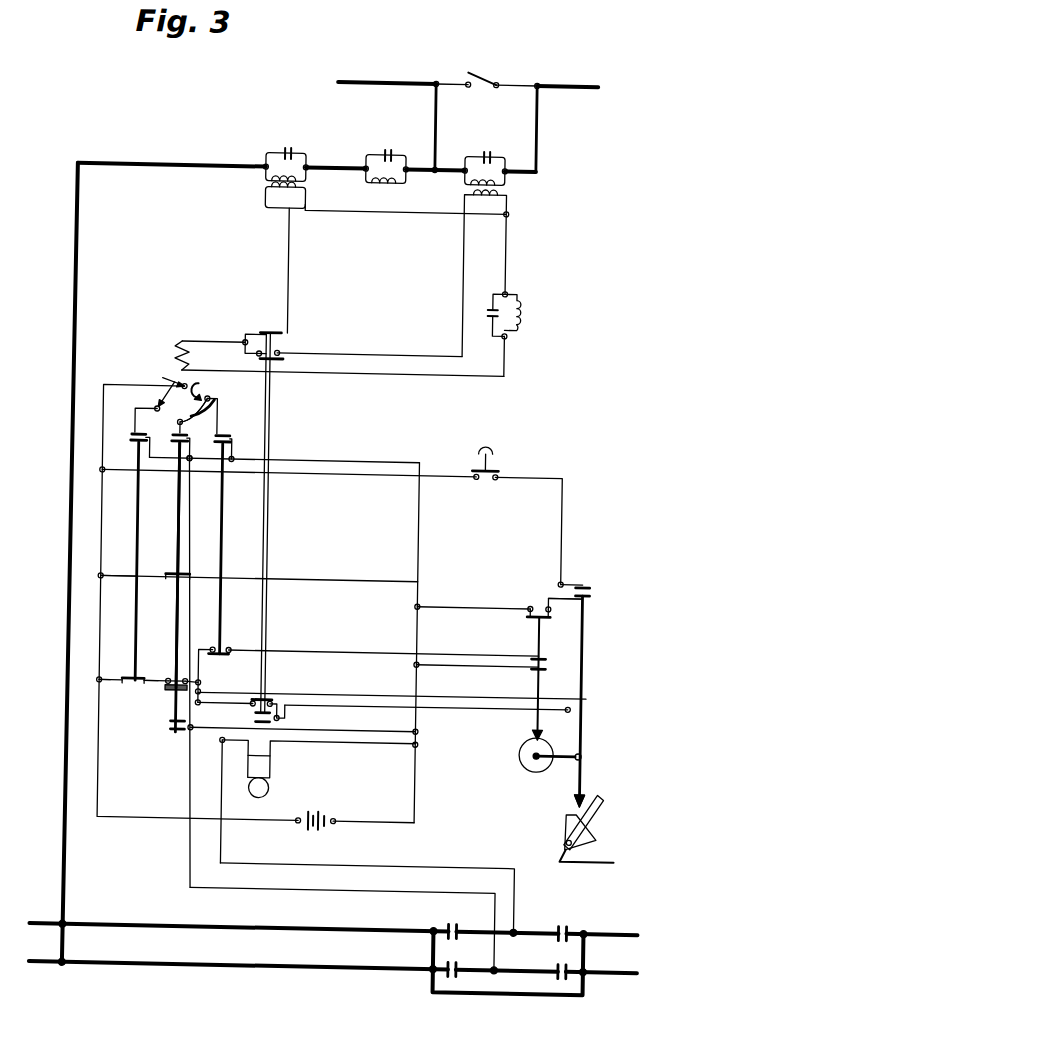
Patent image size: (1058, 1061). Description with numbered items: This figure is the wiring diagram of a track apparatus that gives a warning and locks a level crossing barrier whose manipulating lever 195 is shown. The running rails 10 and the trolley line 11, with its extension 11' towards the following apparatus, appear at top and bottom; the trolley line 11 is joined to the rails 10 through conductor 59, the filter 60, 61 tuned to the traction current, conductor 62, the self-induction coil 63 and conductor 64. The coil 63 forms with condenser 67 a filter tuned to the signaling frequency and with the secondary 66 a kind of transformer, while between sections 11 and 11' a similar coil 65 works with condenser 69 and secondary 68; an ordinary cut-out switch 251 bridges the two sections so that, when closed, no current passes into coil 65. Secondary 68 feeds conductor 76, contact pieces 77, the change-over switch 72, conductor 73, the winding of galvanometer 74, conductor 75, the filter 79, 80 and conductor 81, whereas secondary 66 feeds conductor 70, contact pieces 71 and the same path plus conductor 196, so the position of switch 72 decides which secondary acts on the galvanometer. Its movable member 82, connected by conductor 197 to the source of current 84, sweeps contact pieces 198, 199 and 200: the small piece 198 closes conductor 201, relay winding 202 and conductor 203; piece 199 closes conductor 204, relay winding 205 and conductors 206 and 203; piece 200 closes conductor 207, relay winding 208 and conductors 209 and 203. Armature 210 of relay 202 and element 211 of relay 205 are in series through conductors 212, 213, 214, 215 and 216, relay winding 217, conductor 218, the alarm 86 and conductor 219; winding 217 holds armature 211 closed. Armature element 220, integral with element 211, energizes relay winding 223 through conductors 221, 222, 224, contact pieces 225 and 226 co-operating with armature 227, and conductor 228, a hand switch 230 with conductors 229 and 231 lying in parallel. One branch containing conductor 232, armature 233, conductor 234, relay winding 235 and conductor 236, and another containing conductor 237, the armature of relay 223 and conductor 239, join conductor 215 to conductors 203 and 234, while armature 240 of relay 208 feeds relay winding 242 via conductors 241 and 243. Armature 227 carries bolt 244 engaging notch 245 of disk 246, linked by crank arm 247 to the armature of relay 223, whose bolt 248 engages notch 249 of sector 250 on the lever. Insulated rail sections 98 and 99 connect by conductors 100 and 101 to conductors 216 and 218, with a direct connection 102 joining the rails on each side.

The running rails 10 is at (626, 932).
The trolley line 11 is at (387, 67).
The extension of trolley line 11' is at (567, 111).
The cut-out switch 251 is at (478, 70).
The conductor 59 is at (431, 114).
The conductor 64 is at (170, 165).
The self-induction coil 63 is at (277, 170).
The condenser 67 is at (283, 149).
The conductor 62 is at (349, 166).
The filter tuned to the traction current 60 is at (382, 152).
The filter tuned to the traction current 61 is at (382, 184).
The condenser 69 is at (490, 157).
The self-induction coil 65 is at (505, 181).
The secondary 66 is at (285, 200).
The conductor 196 is at (410, 213).
The conductor 70 is at (286, 292).
The secondary 68 is at (466, 194).
The conductor 76 is at (460, 280).
The conductor 81 is at (503, 242).
The filter 79 is at (491, 305).
The filter 80 is at (518, 311).
The conductor 75 is at (440, 374).
The contact pieces 77 is at (277, 357).
The contact pieces 71 is at (280, 336).
The change-over switch 72 is at (258, 342).
The conductor 73 is at (197, 343).
The galvanometer 74 is at (172, 357).
The movable member 82 is at (162, 382).
The contact piece 198 is at (144, 400).
The conductor 201 is at (131, 430).
The contact piece 200 is at (198, 396).
The contact piece 199 is at (200, 423).
The conductor 207 is at (214, 409).
The relay winding 208 is at (230, 440).
The relay winding 205 is at (193, 557).
The relay winding 202 is at (126, 556).
The conductor 209 is at (250, 460).
The conductor 204 is at (177, 428).
The conductor 206 is at (190, 464).
The conductor 197 is at (102, 518).
The source of current 84 is at (326, 831).
The conductor 203 is at (416, 460).
The conductor 229 is at (367, 476).
The hand switch 230 is at (486, 471).
The conductor 231 is at (562, 500).
The conductor 222 is at (315, 579).
The armature element 220 is at (186, 575).
The conductor 221 is at (132, 582).
The movable armature 210 is at (134, 681).
The conductor 212 is at (101, 690).
The armature element 211 is at (150, 688).
The conductor 213 is at (168, 683).
The conductor 214 is at (182, 682).
The relay winding 217 is at (180, 736).
The conductor 216 is at (193, 760).
The conductor 100 is at (262, 891).
The armature 240 is at (231, 657).
The conductor 215 is at (202, 674).
The conductor 241 is at (366, 651).
The conductor 243 is at (489, 664).
The relay winding 242 is at (543, 662).
The conductor 237 is at (372, 693).
The conductor 232 is at (238, 703).
The armature 233 is at (278, 700).
The conductor 234 is at (289, 719).
The conductor 239 is at (447, 707).
The relay winding 235 is at (270, 726).
The conductor 236 is at (373, 730).
The conductor 219 is at (371, 744).
The alarm 86 is at (273, 773).
The conductor 218 is at (224, 763).
The conductor 101 is at (441, 864).
The insulated rail section 99 is at (525, 927).
The conductor 228 is at (471, 606).
The contact piece 226 is at (529, 603).
The contact piece 225 is at (560, 583).
The conductor 224 is at (562, 596).
The relay winding 223 is at (589, 585).
The armature 227 is at (537, 616).
The bolt 244 is at (535, 733).
The notch 245 is at (524, 745).
The disk 246 is at (533, 760).
The crank arm 247 is at (566, 755).
The bolt 248 is at (580, 790).
The notch 249 is at (601, 816).
The sector 250 is at (594, 838).
The manipulating lever 195 is at (566, 852).
The direct electric connection 102 is at (503, 992).
The insulated rail section 98 is at (521, 970).